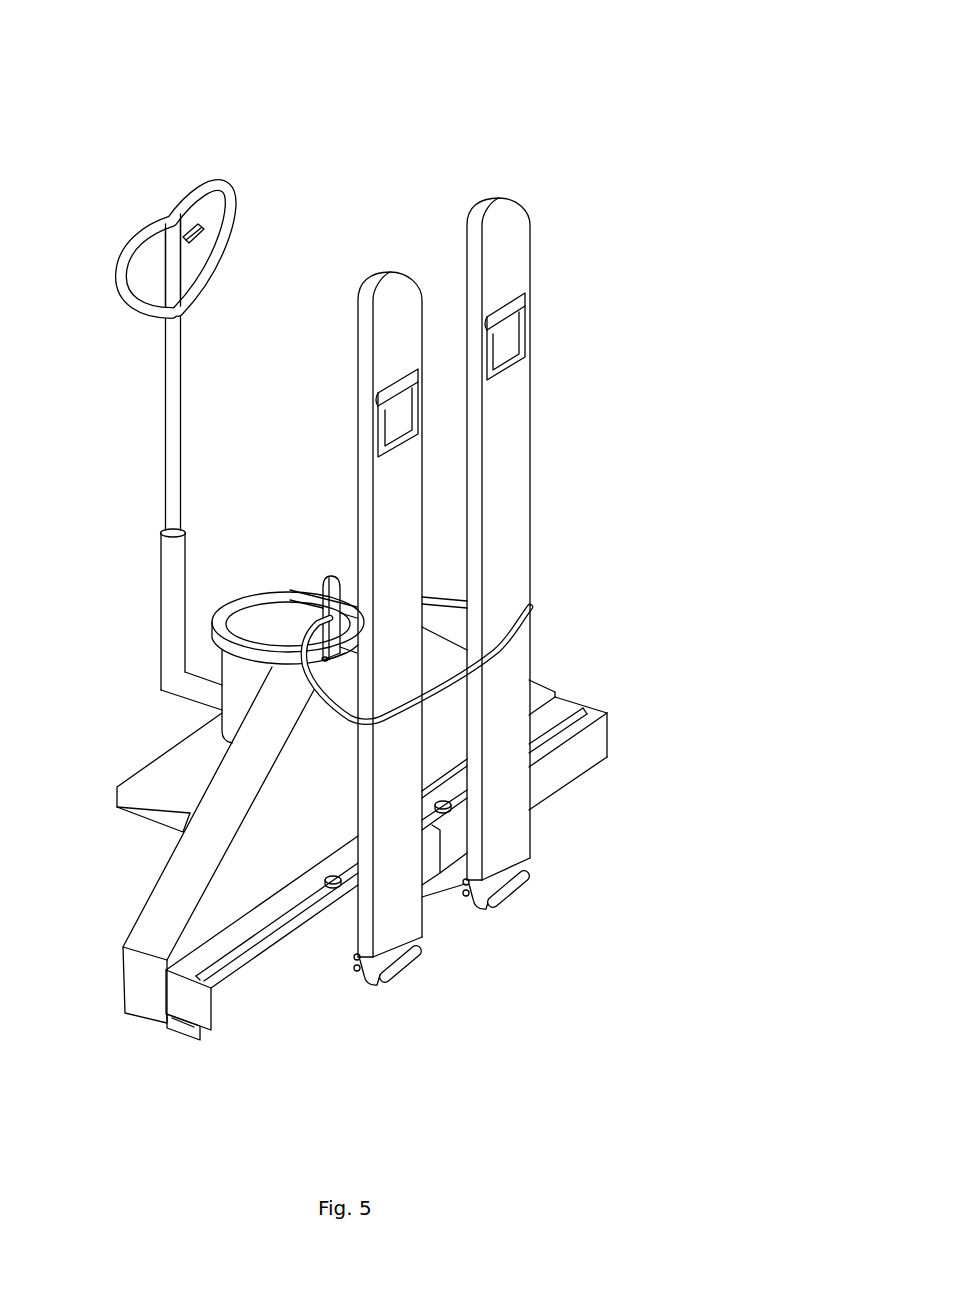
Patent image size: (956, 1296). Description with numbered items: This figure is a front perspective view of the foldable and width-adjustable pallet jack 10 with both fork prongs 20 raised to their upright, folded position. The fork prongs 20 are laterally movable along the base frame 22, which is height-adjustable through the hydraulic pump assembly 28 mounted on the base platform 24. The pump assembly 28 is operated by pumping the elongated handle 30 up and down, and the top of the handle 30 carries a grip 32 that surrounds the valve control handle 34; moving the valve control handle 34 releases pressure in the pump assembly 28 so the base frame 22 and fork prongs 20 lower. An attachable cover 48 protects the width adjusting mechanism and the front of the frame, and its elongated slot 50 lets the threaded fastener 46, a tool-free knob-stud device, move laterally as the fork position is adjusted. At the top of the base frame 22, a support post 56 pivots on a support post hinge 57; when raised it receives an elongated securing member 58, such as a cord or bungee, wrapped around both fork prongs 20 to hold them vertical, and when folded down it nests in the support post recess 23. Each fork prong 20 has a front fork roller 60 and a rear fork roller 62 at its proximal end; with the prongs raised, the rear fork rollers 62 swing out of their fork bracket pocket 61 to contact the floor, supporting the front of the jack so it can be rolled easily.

The foldable pallet jack 10 is at (697, 142).
The fork prong 20 is at (368, 495).
The base frame 22 is at (145, 975).
The support post recess 23 is at (272, 620).
The base platform 24 is at (150, 806).
The hydraulic pump assembly 28 is at (242, 707).
The handle 30 is at (172, 432).
The grip 32 is at (147, 230).
The valve control handle 34 is at (190, 246).
The threaded fastener 46 is at (443, 800).
The cover 48 is at (590, 750).
The elongated slot 50 is at (257, 942).
The support post 56 is at (322, 582).
The support post hinge 57 is at (330, 662).
The securing member 58 is at (524, 628).
The front fork roller 60 is at (392, 393).
The fork bracket pocket 61 is at (390, 423).
The rear fork roller 62 is at (398, 963).